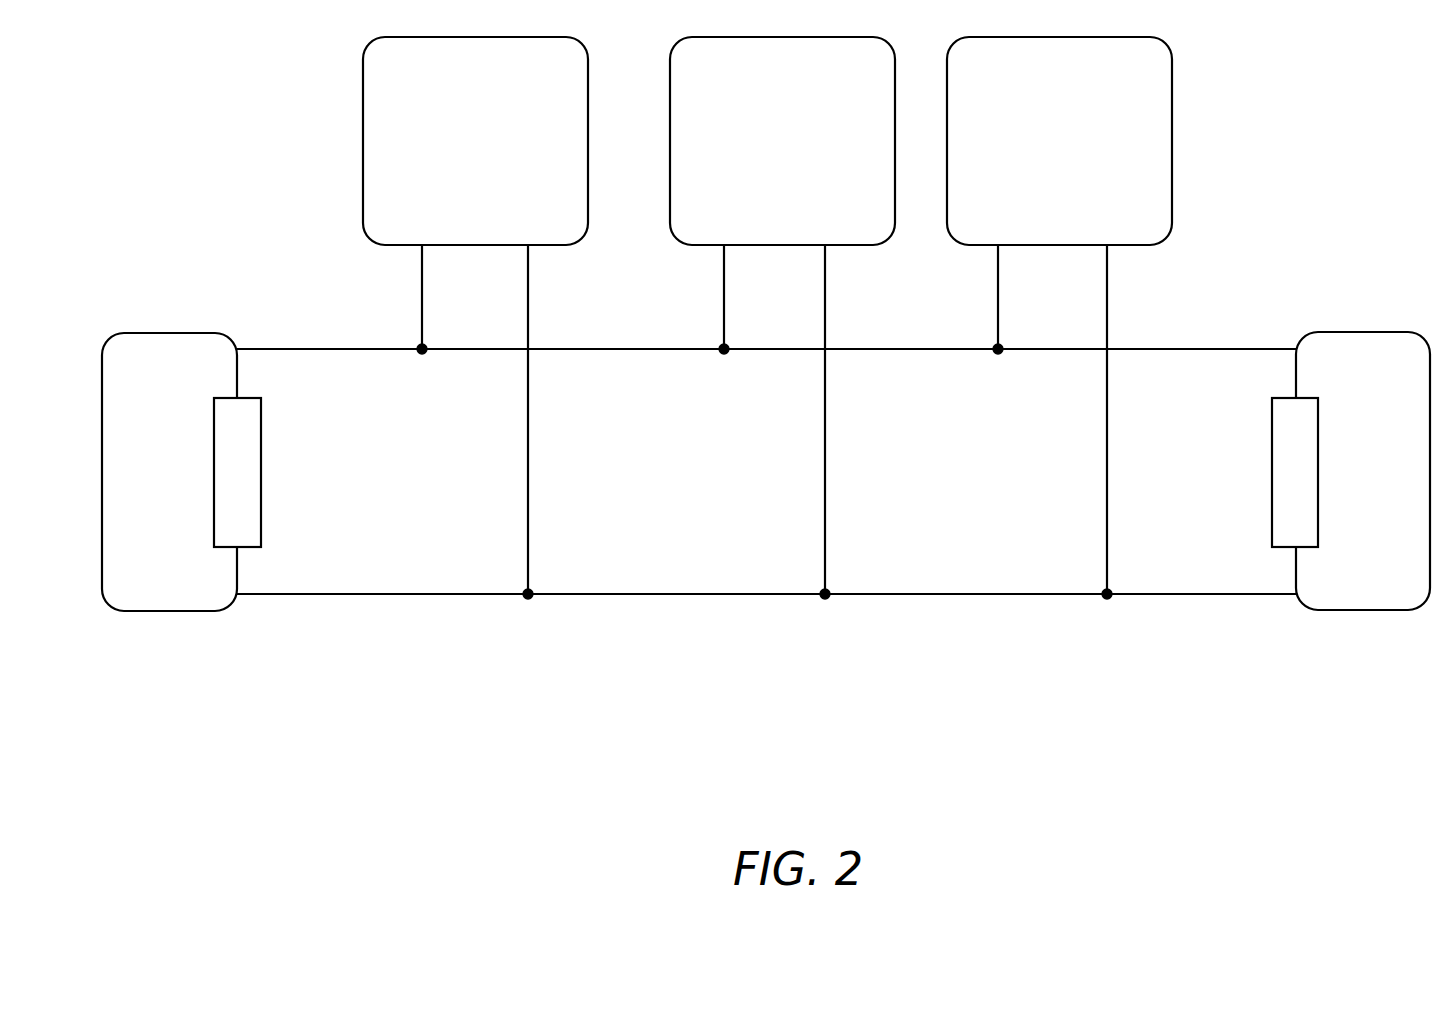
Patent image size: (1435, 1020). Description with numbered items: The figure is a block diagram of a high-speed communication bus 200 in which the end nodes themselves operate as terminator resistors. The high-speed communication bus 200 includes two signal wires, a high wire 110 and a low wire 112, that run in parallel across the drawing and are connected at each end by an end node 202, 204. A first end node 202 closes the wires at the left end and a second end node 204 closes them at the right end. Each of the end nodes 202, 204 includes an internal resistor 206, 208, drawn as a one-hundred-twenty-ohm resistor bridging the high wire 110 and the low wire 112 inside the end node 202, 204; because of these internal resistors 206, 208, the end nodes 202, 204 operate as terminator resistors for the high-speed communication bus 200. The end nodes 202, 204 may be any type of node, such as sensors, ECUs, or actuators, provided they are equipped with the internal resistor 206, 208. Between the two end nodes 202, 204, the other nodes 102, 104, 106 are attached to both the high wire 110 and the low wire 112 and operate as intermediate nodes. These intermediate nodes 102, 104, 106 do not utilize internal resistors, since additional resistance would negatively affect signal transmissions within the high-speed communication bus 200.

The high-speed communication bus 200 is at (320, 155).
The node 102 is at (452, 174).
The node 104 is at (761, 174).
The node 106 is at (1037, 174).
The high wire 110 is at (318, 348).
The low wire 112 is at (437, 593).
The end node 202 is at (197, 496).
The end node 204 is at (1334, 493).
The internal resistor 206 is at (261, 417).
The internal resistor 208 is at (1272, 420).